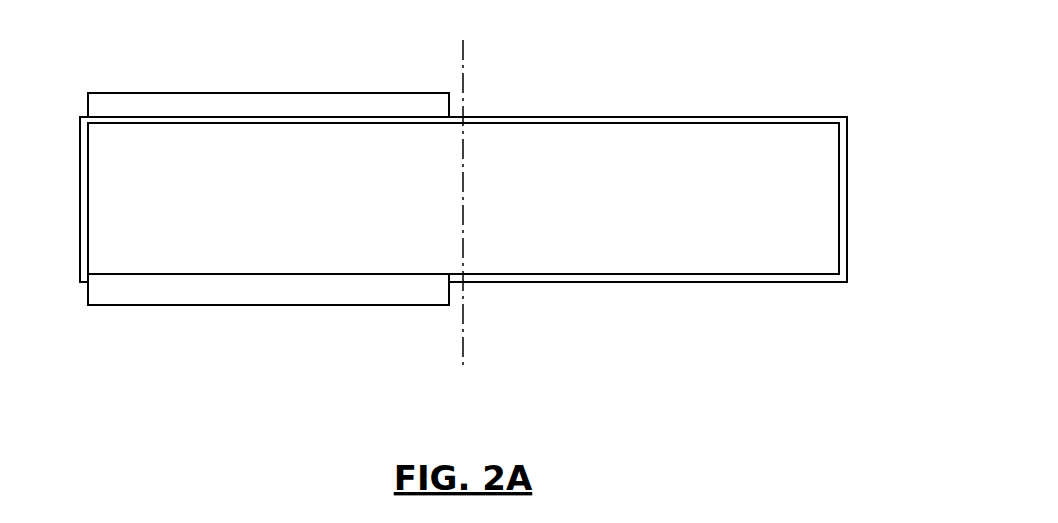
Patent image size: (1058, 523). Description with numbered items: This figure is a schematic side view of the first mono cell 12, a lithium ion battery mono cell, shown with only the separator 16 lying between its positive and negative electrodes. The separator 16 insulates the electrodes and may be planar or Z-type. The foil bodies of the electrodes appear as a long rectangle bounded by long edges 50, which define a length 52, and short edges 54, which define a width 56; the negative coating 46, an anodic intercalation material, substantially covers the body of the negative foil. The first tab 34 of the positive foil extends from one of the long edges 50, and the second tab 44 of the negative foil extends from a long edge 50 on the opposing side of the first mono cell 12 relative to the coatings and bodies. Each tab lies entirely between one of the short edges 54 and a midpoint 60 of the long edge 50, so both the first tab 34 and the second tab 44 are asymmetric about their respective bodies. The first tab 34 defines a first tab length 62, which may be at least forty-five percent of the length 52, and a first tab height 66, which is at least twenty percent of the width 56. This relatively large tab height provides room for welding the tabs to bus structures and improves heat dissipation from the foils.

The first mono cell 12 is at (473, 209).
The separator 16 is at (605, 117).
The first tab 34 is at (98, 108).
The second tab 44 is at (337, 297).
The negative coating 46 is at (463, 198).
The long edges 50 is at (645, 274).
The length 52 is at (838, 402).
The short edges 54 is at (82, 252).
The width 56 is at (20, 123).
The midpoint 60 is at (465, 318).
The first tab length 62 is at (449, 71).
The first tab height 66 is at (508, 170).